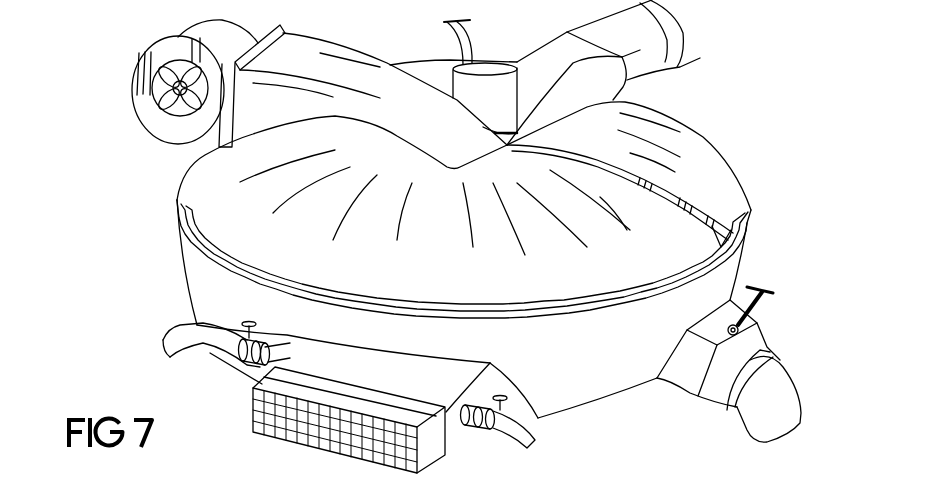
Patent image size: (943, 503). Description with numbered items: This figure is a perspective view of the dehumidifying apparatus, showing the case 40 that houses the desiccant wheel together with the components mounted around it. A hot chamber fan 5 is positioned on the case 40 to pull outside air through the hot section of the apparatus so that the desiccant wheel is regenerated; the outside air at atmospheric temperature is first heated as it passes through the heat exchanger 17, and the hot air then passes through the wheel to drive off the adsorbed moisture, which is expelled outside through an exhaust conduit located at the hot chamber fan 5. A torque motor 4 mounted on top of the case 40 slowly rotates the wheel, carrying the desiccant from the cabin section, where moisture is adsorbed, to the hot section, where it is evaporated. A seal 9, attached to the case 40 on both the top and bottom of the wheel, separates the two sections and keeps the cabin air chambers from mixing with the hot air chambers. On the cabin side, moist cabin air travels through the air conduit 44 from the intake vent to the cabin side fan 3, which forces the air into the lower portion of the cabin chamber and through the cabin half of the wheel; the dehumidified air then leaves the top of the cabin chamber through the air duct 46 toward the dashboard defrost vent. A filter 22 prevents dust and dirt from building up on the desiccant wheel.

The cabin side fan 3 is at (703, 393).
The torque motor 4 is at (488, 72).
The hot chamber fan 5 is at (147, 113).
The seal 9 is at (733, 248).
The heat exchanger 17 is at (457, 434).
The filter 22 is at (297, 428).
The case 40 is at (176, 192).
The air conduit 44 is at (780, 390).
The air duct 46 is at (653, 65).